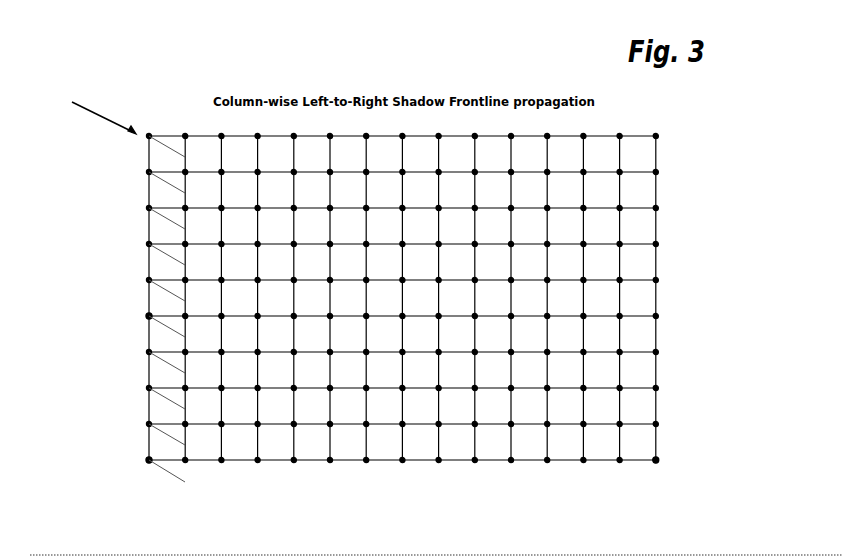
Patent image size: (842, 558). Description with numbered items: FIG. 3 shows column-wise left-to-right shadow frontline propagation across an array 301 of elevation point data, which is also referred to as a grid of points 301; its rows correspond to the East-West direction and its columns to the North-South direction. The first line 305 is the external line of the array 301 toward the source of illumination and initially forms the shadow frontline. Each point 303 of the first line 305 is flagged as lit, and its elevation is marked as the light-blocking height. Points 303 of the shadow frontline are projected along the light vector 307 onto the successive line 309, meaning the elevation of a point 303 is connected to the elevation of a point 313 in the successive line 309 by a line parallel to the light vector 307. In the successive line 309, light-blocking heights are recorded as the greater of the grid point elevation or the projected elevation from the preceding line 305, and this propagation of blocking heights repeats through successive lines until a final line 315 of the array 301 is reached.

The array 301 is at (677, 238).
The point 303 is at (149, 316).
The first line 305 is at (147, 493).
The light vector 307 is at (110, 120).
The successive line 309 is at (185, 485).
The point in the successive line 313 is at (188, 333).
The final line 315 is at (658, 478).